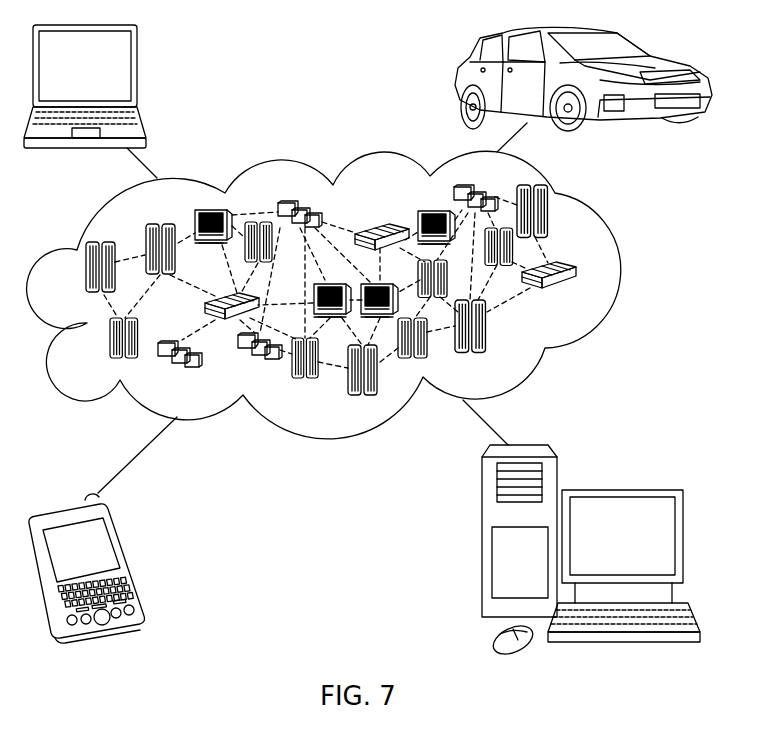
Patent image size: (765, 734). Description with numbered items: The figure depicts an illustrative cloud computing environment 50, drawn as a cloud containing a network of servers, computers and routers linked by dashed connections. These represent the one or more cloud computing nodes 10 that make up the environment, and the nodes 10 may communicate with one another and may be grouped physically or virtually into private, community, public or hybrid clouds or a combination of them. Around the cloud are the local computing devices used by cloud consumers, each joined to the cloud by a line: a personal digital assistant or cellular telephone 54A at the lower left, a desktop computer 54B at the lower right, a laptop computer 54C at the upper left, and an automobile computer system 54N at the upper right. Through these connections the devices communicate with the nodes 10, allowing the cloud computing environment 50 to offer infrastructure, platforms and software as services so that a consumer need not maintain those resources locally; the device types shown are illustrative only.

The cloud computing nodes 10 is at (582, 298).
The cloud computing environment 50 is at (620, 270).
The personal digital assistant or cellular telephone 54A is at (130, 556).
The desktop computer 54B is at (619, 488).
The laptop computer 54C is at (137, 72).
The automobile computer system 54N is at (458, 84).